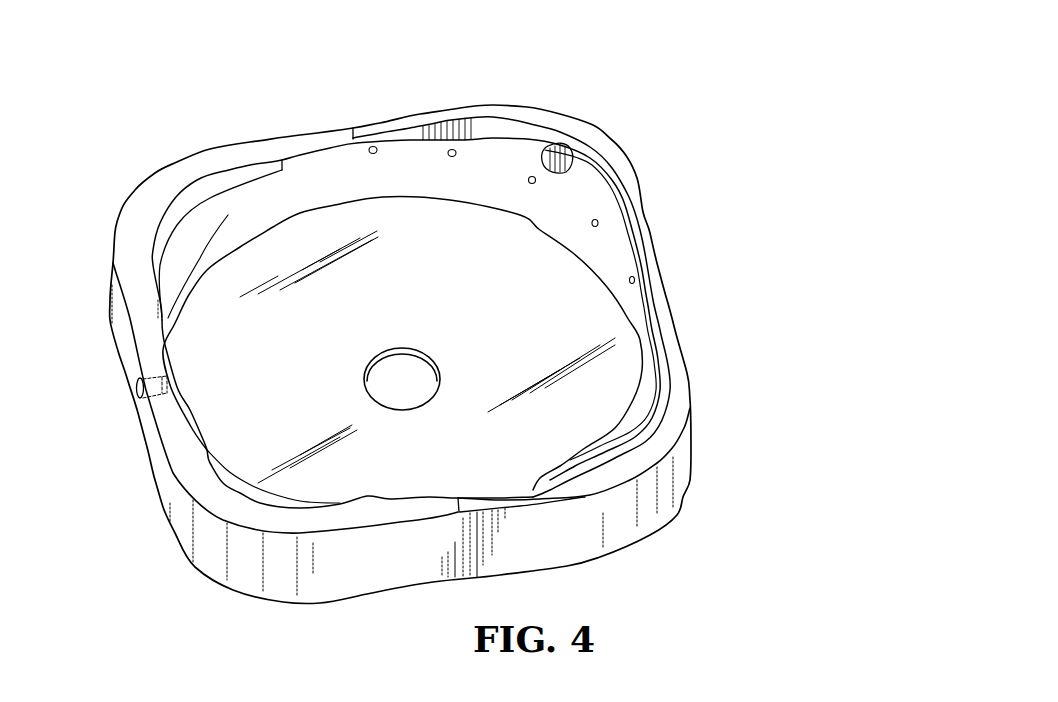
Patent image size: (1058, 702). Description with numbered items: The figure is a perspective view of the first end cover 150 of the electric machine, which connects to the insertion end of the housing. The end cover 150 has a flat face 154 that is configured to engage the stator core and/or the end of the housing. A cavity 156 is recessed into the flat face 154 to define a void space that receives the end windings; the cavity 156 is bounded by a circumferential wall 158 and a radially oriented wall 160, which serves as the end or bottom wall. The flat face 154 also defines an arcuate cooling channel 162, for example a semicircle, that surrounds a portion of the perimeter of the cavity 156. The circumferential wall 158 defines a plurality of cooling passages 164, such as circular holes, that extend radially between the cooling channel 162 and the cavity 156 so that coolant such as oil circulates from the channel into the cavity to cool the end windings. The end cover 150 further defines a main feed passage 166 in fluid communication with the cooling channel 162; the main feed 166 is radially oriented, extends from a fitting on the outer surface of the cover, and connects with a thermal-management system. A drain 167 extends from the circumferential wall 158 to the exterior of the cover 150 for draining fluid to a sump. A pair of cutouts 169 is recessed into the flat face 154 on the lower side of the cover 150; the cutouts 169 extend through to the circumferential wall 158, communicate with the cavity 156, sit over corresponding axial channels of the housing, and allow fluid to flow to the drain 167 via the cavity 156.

The first end cover 150 is at (377, 304).
The flat face 154 is at (663, 433).
The cavity 156 is at (580, 285).
The circumferential wall 158 is at (188, 268).
The radially oriented wall 160 is at (440, 294).
The arcuate cooling channel 162 is at (607, 183).
The cooling passages 164 is at (452, 153).
The main feed passage 166 is at (557, 153).
The drain 167 is at (137, 387).
The cutouts 169 is at (208, 178).